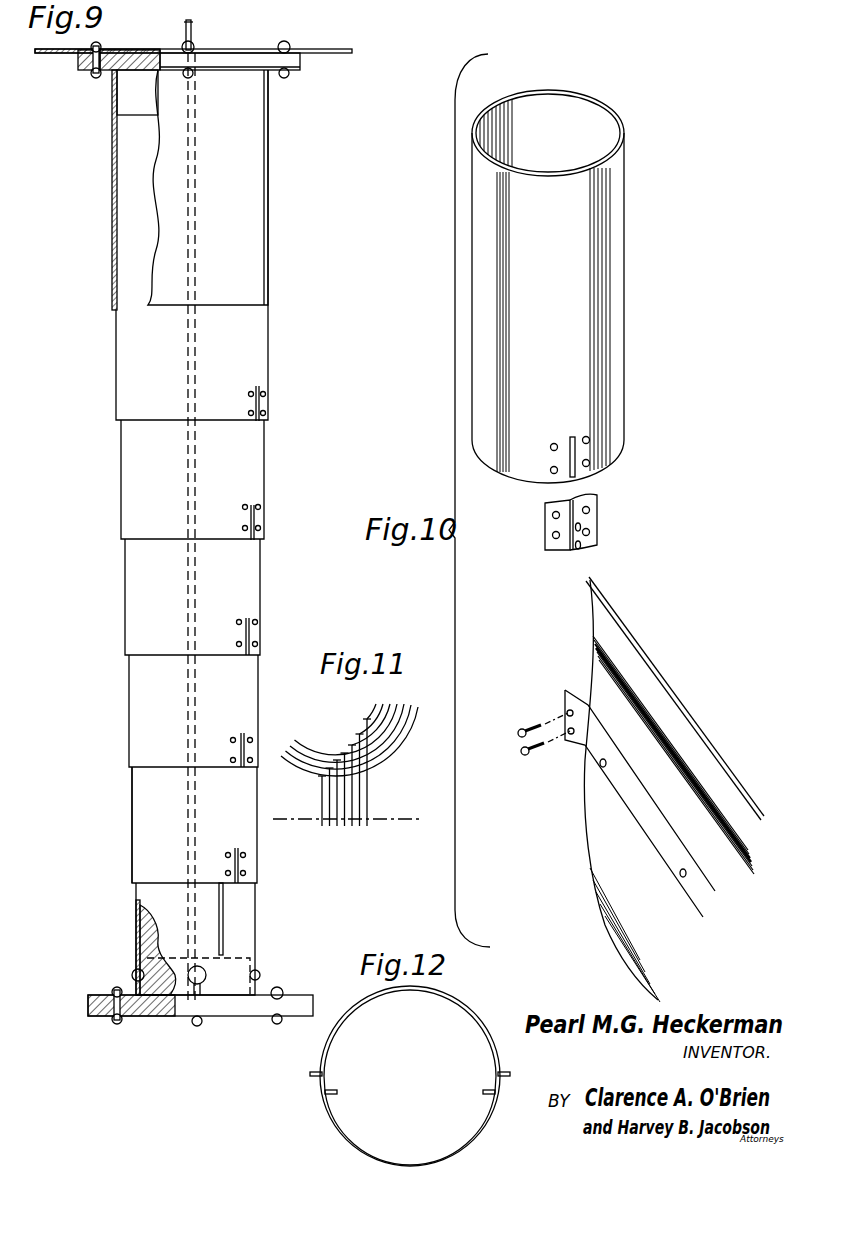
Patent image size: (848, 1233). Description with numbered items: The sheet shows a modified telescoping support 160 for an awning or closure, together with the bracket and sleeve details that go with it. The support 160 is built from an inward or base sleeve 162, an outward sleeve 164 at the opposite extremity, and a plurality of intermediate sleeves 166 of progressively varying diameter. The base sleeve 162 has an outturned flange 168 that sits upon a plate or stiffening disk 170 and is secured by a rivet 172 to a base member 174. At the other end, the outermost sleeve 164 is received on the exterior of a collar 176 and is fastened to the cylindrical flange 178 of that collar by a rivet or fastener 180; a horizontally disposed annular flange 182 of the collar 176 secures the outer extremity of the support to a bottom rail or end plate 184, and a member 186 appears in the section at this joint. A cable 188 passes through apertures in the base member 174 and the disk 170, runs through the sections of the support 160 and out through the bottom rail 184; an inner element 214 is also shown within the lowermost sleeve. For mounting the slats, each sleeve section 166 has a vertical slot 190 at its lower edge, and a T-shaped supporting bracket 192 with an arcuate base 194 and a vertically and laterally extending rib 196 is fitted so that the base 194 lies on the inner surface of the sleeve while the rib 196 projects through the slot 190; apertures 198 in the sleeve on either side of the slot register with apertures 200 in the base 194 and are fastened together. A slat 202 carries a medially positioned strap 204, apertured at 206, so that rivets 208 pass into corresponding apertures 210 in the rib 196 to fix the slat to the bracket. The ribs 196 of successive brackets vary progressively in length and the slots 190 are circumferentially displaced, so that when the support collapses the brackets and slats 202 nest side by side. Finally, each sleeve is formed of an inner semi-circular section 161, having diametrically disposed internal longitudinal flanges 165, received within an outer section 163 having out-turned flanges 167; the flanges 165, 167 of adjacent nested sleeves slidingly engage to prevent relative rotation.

In FIG. 9, the telescoping support 160 is at (277, 344).
In FIG. 12, the inner semi-circular section 161 is at (464, 1008).
In FIG. 9, the inward or base sleeve 162 is at (256, 168).
In FIG. 12, the outer semi-circular section 163 is at (474, 1140).
In FIG. 9, the outward sleeve 164 is at (136, 930).
In FIG. 12, the internal longitudinal flanges 165 is at (334, 1089).
In FIG. 9, the intermediate sleeve 166 is at (153, 748).
In FIG. 10, the intermediate sleeve 166 is at (618, 311).
In FIG. 11, the intermediate sleeve 166 is at (377, 730).
In FIG. 12, the out-turned flanges 167 is at (316, 1073).
In FIG. 9, the outturned flange 168 is at (84, 73).
In FIG. 9, the plate or stiffening disk 170 is at (80, 58).
In FIG. 9, the rivet 172 is at (115, 72).
In FIG. 9, the base member 174 is at (322, 48).
In FIG. 9, the collar 176 is at (160, 988).
In FIG. 9, the cylindrical flange 178 is at (150, 966).
In FIG. 9, the rivet or fastener 180 is at (142, 982).
In FIG. 9, the annular flange 182 is at (103, 997).
In FIG. 9, the bottom rail or end plate 184 is at (92, 1010).
In FIG. 9, the seat 186 is at (156, 1000).
In FIG. 9, the cable 188 is at (192, 38).
In FIG. 10, the vertical slot 190 is at (575, 456).
In FIG. 10, the T-shaped supporting bracket 192 is at (600, 521).
In FIG. 10, the arcuate base 194 is at (547, 530).
In FIG. 10, the rib 196 is at (585, 548).
In FIG. 11, the rib 196 is at (352, 807).
In FIG. 10, the apertures in sleeve 198 is at (583, 438).
In FIG. 10, the apertures in bracket base 200 is at (556, 538).
In FIG. 10, the slat 202 is at (652, 697).
In FIG. 10, the strap 204 is at (588, 752).
In FIG. 10, the strap apertures 206 is at (568, 712).
In FIG. 10, the rivets 208 is at (519, 738).
In FIG. 10, the rib apertures 210 is at (576, 552).
In FIG. 9, the rod 214 is at (223, 930).